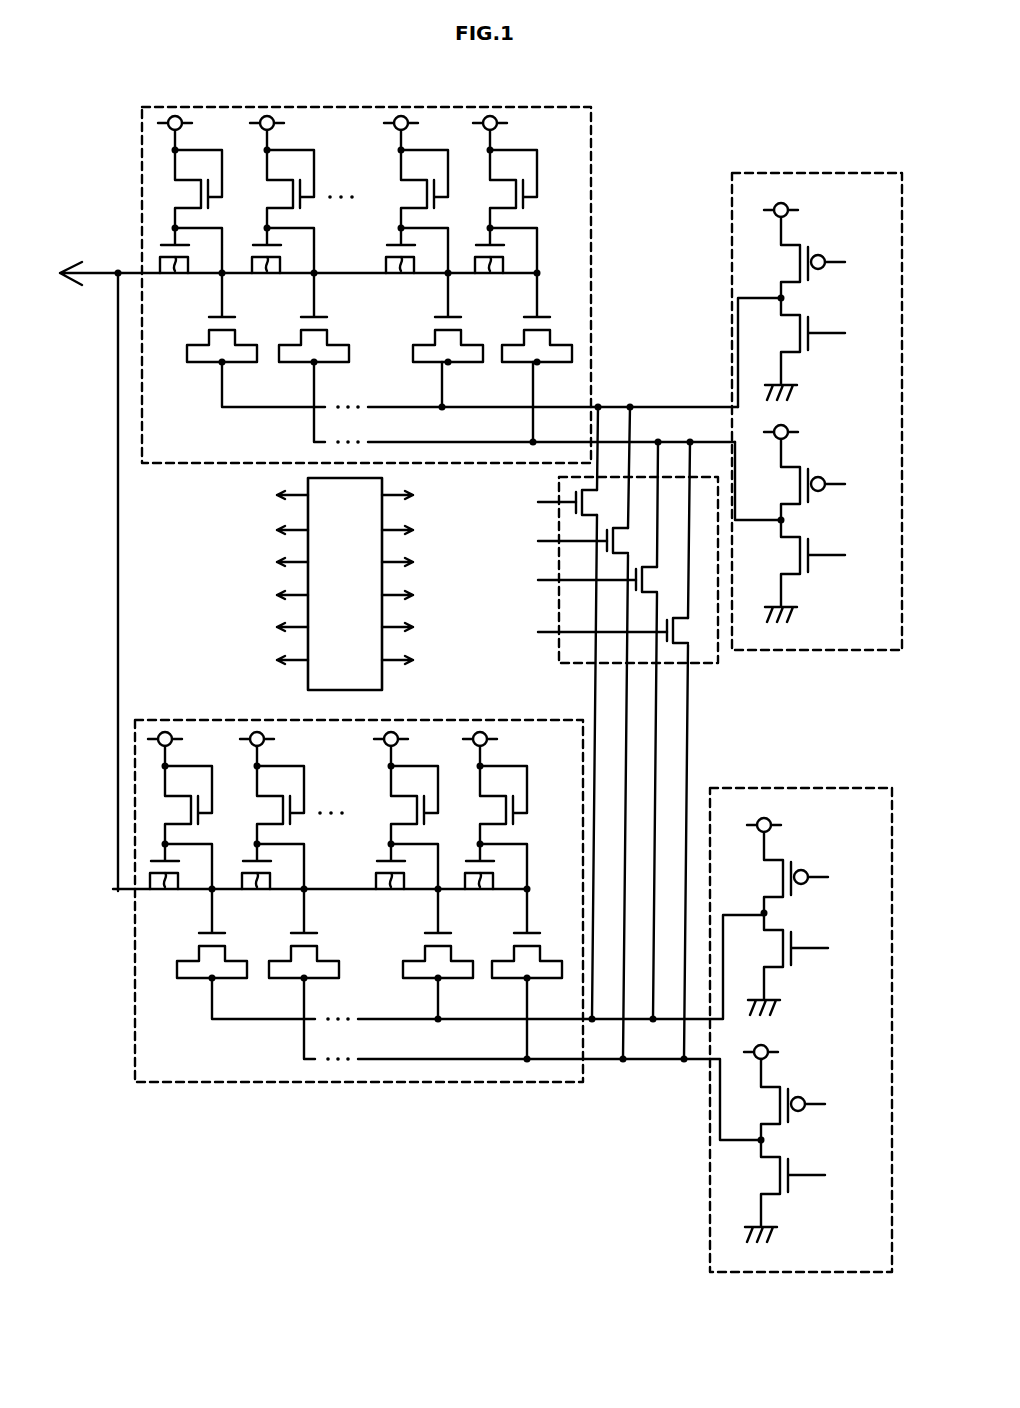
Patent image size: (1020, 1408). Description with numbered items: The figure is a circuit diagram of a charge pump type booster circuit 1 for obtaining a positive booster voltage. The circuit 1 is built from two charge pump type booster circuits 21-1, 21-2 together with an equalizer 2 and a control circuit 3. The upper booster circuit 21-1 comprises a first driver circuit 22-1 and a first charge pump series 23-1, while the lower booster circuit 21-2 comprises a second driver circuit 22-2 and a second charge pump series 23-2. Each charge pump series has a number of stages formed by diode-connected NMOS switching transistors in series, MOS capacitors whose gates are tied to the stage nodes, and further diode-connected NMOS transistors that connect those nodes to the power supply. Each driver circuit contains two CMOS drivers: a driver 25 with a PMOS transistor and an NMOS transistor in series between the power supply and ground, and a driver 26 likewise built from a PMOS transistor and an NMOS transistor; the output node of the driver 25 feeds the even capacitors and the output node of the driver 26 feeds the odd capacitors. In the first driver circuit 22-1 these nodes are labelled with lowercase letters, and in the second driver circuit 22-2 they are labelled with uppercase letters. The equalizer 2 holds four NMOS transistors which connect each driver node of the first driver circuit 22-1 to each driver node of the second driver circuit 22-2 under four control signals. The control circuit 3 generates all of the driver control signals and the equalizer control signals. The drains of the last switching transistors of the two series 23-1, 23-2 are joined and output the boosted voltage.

The charge pump type booster circuit 1 is at (632, 74).
The equalizer 2 is at (559, 663).
The control circuit 3 is at (382, 678).
The charge pump type booster circuit 21-1 is at (702, 145).
The charge pump type booster circuit 21-2 is at (726, 742).
The first driver circuit 22-1 is at (853, 172).
The second driver circuit 22-2 is at (848, 788).
The first charge pump series 23-1 is at (606, 112).
The second charge pump series 23-2 is at (412, 1085).
The CMOS driver 25 is at (834, 221).
The CMOS driver 26 is at (831, 437).